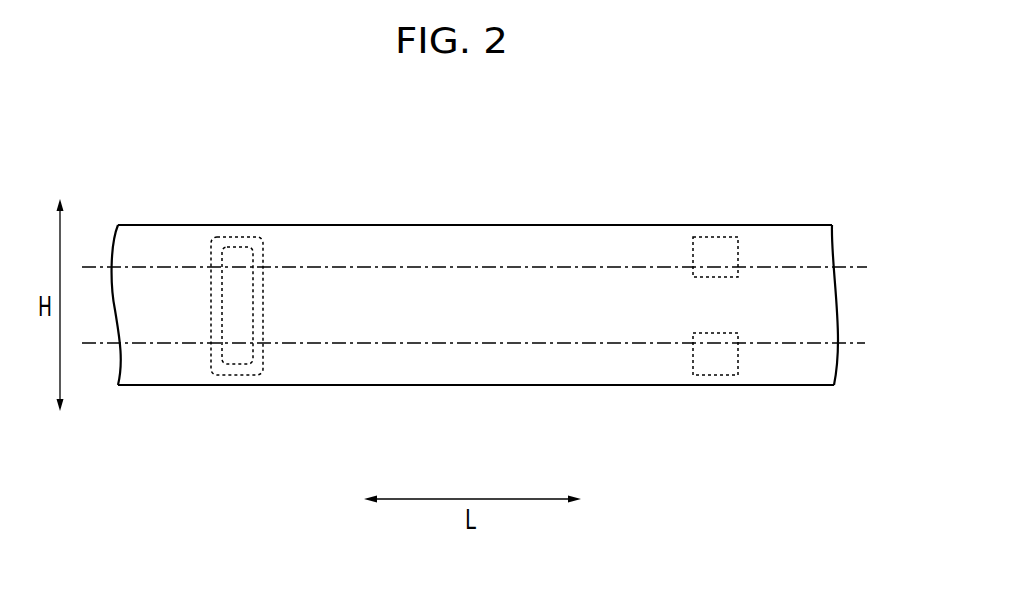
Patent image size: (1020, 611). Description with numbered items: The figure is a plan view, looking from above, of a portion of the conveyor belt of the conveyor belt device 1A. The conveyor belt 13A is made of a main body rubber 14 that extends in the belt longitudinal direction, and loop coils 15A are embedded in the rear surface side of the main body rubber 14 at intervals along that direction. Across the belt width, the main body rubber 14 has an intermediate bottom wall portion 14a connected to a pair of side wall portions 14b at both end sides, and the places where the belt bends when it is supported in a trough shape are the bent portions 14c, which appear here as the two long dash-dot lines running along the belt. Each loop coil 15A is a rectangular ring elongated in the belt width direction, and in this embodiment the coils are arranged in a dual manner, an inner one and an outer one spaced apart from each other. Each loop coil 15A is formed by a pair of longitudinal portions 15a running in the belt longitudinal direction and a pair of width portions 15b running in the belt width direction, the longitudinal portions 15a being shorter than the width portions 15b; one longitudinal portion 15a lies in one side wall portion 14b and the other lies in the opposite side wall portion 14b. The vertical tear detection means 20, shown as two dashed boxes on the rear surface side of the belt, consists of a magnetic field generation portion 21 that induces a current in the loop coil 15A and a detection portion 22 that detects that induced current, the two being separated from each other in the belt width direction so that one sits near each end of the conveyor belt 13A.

The vehicle body panel 1A is at (788, 172).
The conveyor belt 13A is at (143, 213).
The main body rubber 14 is at (482, 240).
The bottom wall portion 14a is at (597, 293).
The side wall portion 14b is at (538, 243).
The bent portion 14c is at (840, 267).
The loop coil 15A is at (279, 246).
The longitudinal portion 15a is at (224, 247).
The width portion 15b is at (211, 256).
The vertical tear detection means 20 is at (737, 473).
The magnetic field generation portion 21 is at (693, 255).
The detection portion 22 is at (713, 375).